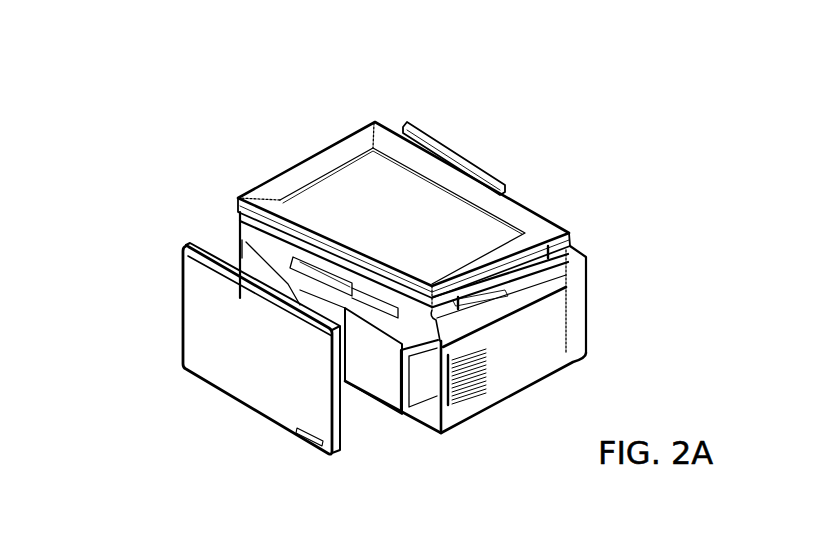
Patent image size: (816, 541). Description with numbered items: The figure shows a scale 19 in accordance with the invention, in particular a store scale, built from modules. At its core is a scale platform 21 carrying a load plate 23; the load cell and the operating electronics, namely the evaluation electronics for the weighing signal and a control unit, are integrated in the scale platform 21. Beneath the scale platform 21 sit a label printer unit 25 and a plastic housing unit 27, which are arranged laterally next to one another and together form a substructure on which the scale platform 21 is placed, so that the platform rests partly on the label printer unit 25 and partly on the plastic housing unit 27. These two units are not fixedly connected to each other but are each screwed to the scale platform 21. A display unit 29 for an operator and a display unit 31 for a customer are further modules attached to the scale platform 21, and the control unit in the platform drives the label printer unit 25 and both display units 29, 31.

The scale 19 is at (245, 143).
The scale platform 21 is at (257, 235).
The load plate 23 is at (523, 220).
The label printer unit 25 is at (538, 347).
The plastic housing unit 27 is at (257, 267).
The display unit for an operator 29 is at (232, 397).
The display unit for a customer 31 is at (462, 153).